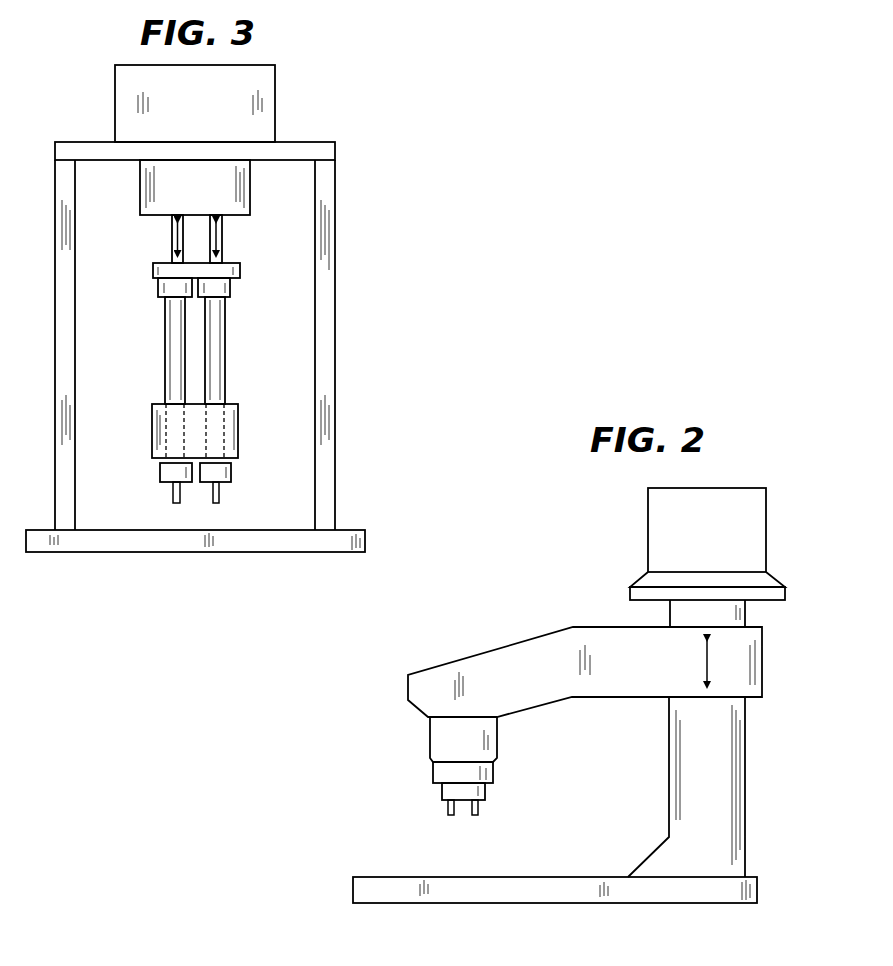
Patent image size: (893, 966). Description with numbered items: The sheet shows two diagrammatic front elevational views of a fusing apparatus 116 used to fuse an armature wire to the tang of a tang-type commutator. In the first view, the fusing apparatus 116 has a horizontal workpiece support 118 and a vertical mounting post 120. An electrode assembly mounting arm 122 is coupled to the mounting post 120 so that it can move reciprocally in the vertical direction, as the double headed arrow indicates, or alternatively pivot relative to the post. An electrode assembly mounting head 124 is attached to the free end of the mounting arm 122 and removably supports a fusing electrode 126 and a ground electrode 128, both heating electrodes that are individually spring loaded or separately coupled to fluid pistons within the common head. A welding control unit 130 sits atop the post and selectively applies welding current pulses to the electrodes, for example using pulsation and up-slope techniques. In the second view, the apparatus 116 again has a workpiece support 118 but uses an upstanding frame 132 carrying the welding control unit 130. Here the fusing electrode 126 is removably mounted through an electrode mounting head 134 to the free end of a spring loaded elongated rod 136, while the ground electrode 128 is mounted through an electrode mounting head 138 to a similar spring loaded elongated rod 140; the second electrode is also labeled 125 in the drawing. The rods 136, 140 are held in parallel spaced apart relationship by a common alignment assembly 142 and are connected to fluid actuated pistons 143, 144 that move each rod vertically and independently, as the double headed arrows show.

In FIG. 3, the fusing apparatus 116 is at (254, 336).
In FIG. 2, the fusing apparatus 116 is at (624, 738).
In FIG. 3, the workpiece support 118 is at (62, 556).
In FIG. 2, the workpiece support 118 is at (365, 890).
In FIG. 2, the mounting post 120 is at (720, 723).
In FIG. 2, the electrode assembly mounting arm 122 is at (748, 657).
In FIG. 2, the electrode assembly mounting head 124 is at (433, 771).
In FIG. 3, the welding electrode 125 is at (219, 495).
In FIG. 3, the fusing electrode 126 is at (166, 495).
In FIG. 2, the fusing electrode 126 is at (446, 808).
In FIG. 2, the ground electrode 128 is at (480, 810).
In FIG. 3, the welding control unit 130 is at (277, 108).
In FIG. 2, the welding control unit 130 is at (767, 528).
In FIG. 3, the upstanding frame 132 is at (316, 338).
In FIG. 3, the electrode mounting head 134 is at (160, 475).
In FIG. 3, the spring loaded elongated rod 136 is at (165, 350).
In FIG. 3, the electrode mounting head 138 is at (231, 475).
In FIG. 3, the spring loaded elongated rod 140 is at (225, 357).
In FIG. 3, the alignment assembly 142 is at (153, 270).
In FIG. 3, the fluid actuated piston 143 is at (172, 223).
In FIG. 3, the fluid actuated piston 144 is at (222, 228).